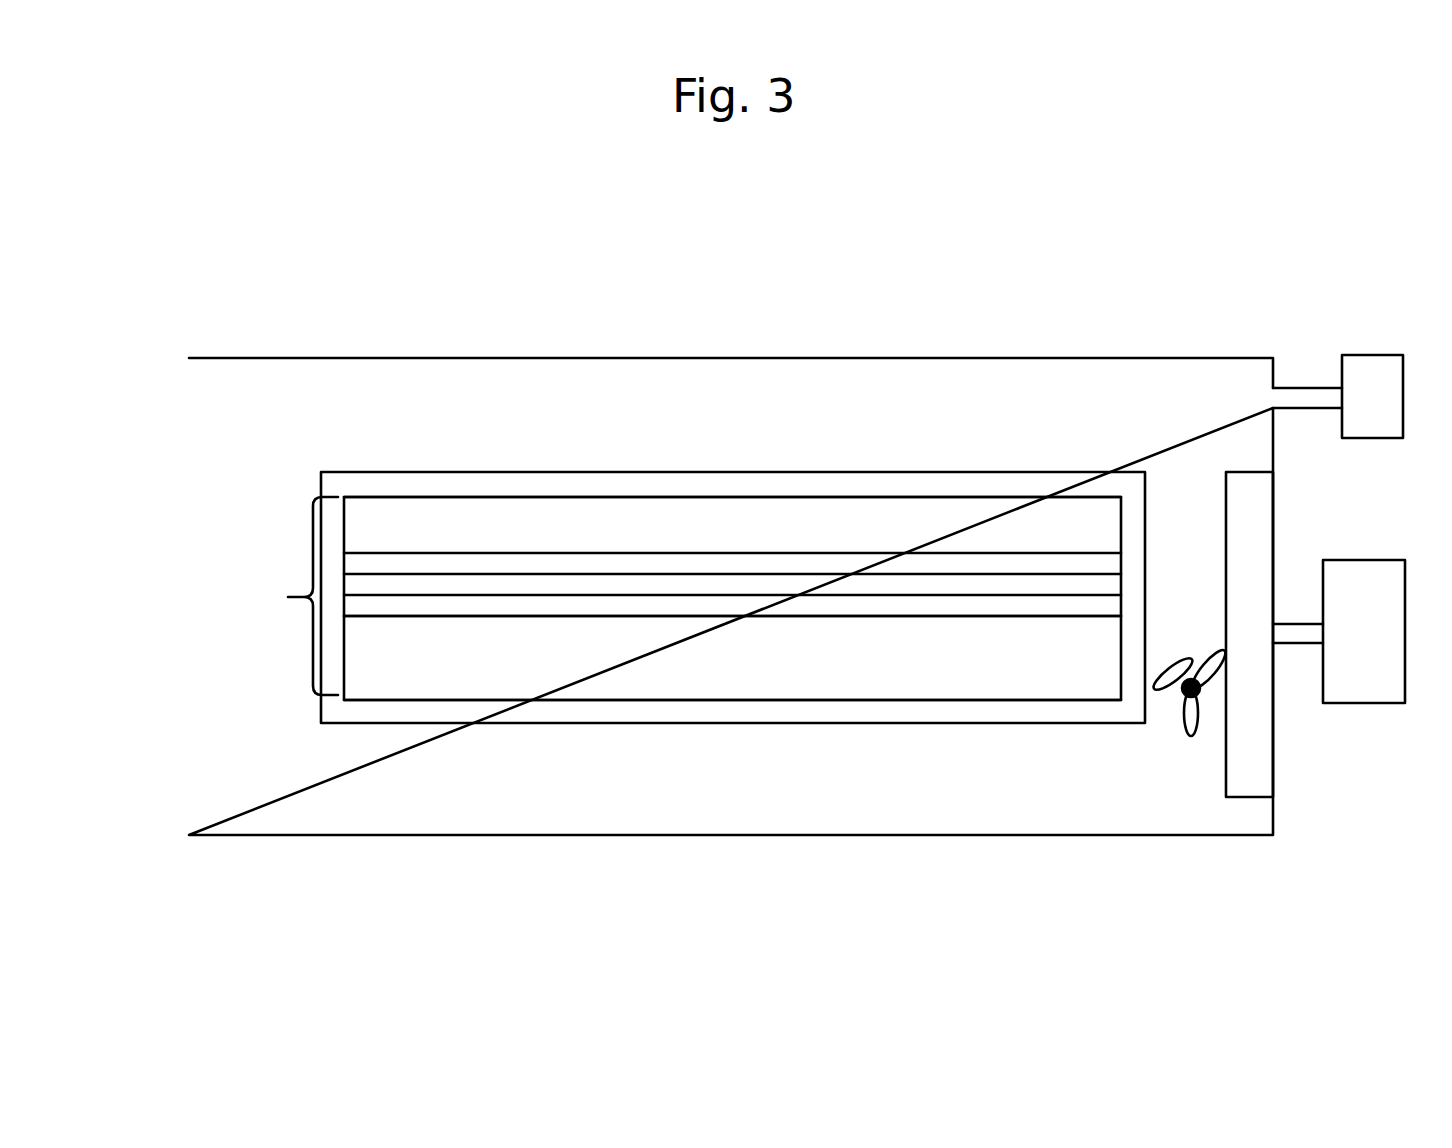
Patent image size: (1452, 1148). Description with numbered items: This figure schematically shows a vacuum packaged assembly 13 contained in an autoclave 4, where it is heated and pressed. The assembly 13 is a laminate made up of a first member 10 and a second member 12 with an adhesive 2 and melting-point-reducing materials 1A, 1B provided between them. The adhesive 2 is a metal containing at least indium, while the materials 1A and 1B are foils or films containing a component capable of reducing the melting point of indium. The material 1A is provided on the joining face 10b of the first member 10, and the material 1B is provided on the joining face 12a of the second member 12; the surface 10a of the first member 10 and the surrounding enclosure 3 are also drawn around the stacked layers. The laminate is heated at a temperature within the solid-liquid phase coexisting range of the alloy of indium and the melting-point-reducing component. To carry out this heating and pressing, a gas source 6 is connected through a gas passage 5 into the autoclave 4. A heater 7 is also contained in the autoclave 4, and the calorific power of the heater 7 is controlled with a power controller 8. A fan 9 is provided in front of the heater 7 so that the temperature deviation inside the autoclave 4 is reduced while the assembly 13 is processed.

The material for reducing the indium melting point 1A is at (805, 567).
The material for reducing the indium melting point 1B is at (662, 605).
The adhesive 2 is at (748, 587).
The cell case 3 is at (1010, 487).
The autoclave 4 is at (1113, 358).
The gas passage 5 is at (1302, 388).
The gas source 6 is at (1372, 396).
The heater 7 is at (1249, 634).
The power controller 8 is at (1339, 631).
The fan 9 is at (1192, 736).
The first member 10 is at (1065, 532).
The upper plate surface 10a is at (938, 495).
The joining face 10b is at (977, 553).
The second member 12 is at (1042, 688).
The joining face 12a is at (497, 618).
The vacuum packaged assembly 13 is at (289, 596).